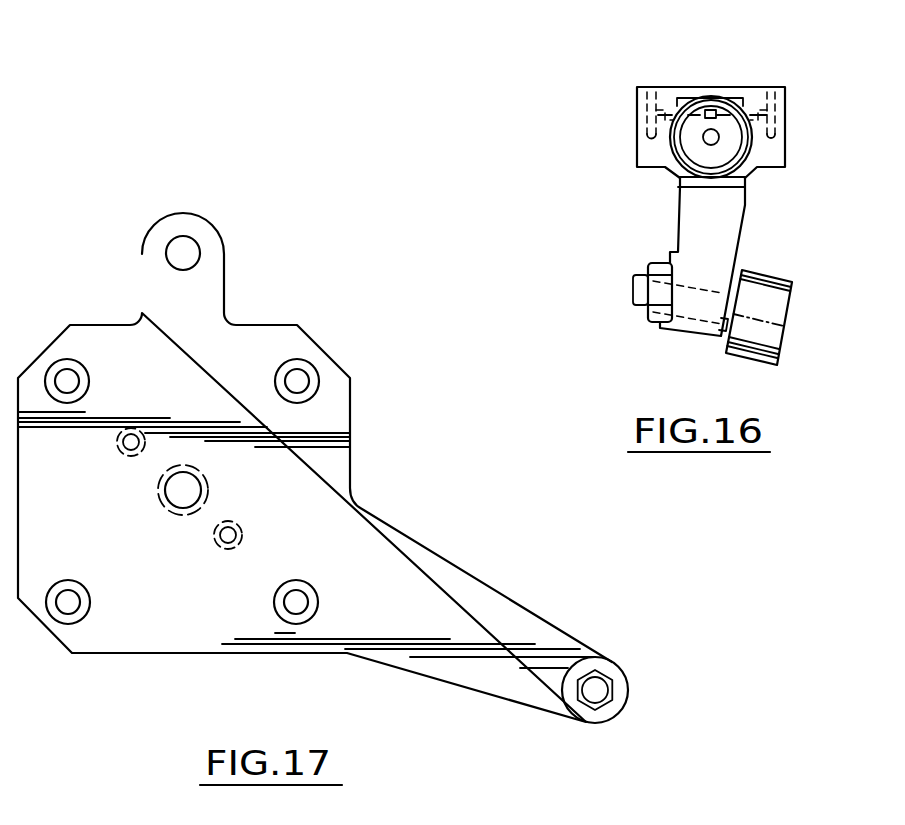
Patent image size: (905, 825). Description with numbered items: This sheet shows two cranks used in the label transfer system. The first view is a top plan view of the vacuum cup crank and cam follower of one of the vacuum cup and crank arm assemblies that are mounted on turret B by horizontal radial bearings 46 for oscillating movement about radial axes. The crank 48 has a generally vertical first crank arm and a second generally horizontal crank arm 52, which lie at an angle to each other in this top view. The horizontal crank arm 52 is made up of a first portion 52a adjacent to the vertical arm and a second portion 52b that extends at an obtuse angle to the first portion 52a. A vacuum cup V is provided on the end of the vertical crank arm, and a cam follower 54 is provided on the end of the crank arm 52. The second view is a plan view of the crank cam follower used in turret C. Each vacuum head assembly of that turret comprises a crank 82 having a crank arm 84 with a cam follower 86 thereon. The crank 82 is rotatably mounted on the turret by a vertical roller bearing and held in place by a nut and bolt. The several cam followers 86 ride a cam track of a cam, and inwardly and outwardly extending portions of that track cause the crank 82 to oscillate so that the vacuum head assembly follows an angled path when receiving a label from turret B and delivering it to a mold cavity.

In FIG. 16, the vacuum cup V is at (719, 96).
In FIG. 16, the horizontal radial bearing 46 is at (781, 117).
In FIG. 16, the crank 48 is at (746, 236).
In FIG. 16, the second generally horizontal crank arm 52 is at (672, 196).
In FIG. 16, the first portion of crank arm 52a is at (745, 200).
In FIG. 16, the second portion of crank arm 52b is at (682, 232).
In FIG. 16, the cam follower 54 is at (775, 313).
In FIG. 17, the crank 82 is at (360, 420).
In FIG. 17, the crank arm 84 is at (470, 588).
In FIG. 17, the cam follower 86 is at (614, 670).